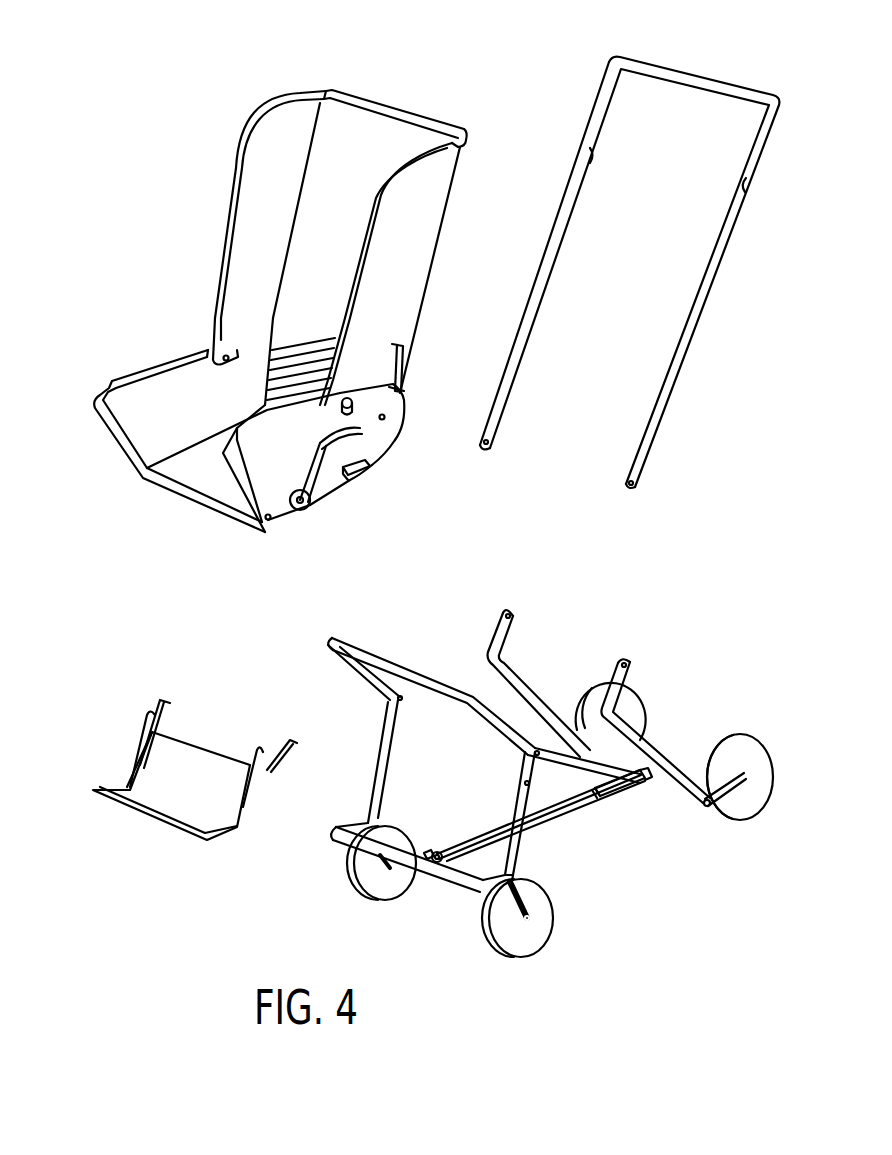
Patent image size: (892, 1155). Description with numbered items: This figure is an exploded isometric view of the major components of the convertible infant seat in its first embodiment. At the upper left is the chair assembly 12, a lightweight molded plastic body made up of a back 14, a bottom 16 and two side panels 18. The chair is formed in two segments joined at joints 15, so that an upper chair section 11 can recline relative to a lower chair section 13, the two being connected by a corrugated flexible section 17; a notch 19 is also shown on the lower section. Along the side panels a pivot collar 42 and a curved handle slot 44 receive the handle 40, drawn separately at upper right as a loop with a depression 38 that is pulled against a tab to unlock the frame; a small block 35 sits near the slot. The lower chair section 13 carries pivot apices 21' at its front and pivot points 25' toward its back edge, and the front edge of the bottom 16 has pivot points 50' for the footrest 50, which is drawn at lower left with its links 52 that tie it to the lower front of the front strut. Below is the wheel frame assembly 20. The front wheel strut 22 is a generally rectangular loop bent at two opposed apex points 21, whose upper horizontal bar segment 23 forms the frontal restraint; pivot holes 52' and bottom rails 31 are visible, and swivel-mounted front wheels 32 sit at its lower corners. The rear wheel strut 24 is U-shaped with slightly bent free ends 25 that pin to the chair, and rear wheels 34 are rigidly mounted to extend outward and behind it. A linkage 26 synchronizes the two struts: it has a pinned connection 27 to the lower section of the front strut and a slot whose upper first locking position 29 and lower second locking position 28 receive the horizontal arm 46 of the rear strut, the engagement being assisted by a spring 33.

The upper chair section 11 is at (457, 186).
The chair assembly 12 is at (200, 208).
The lower chair section 13 is at (203, 330).
The back 14 is at (367, 162).
The joints 15 is at (232, 355).
The bottom 16 is at (200, 479).
The flexible section 17 is at (286, 352).
The side panels 18 is at (282, 188).
The notch 19 is at (242, 452).
The wheel frame assembly 20 is at (665, 645).
The apex points 21 is at (398, 700).
The apices 21' is at (327, 509).
The front wheel strut 22 is at (517, 850).
The upper horizontal bar segment 23 is at (393, 660).
The rear wheel strut 24 is at (662, 765).
The free ends 25 is at (557, 677).
The pivot points 25' is at (395, 412).
The linkage 26 is at (488, 826).
The pinned connection 27 is at (445, 859).
The second locking position 28 is at (598, 798).
The first locking position 29 is at (630, 790).
The bottom rail 31 is at (337, 833).
The front wheels 32 is at (487, 930).
The spring 33 is at (642, 782).
The rear wheels 34 is at (733, 733).
The block 35 is at (370, 472).
The depression 38 is at (745, 183).
The handle 40 is at (713, 98).
The pivot collar 42 is at (340, 410).
The handle slot 44 is at (372, 448).
The horizontal arm 46 is at (592, 766).
The footrest 50 is at (168, 786).
The pivot points 50' is at (297, 529).
The links 52 is at (213, 748).
The pivot 52' is at (448, 761).